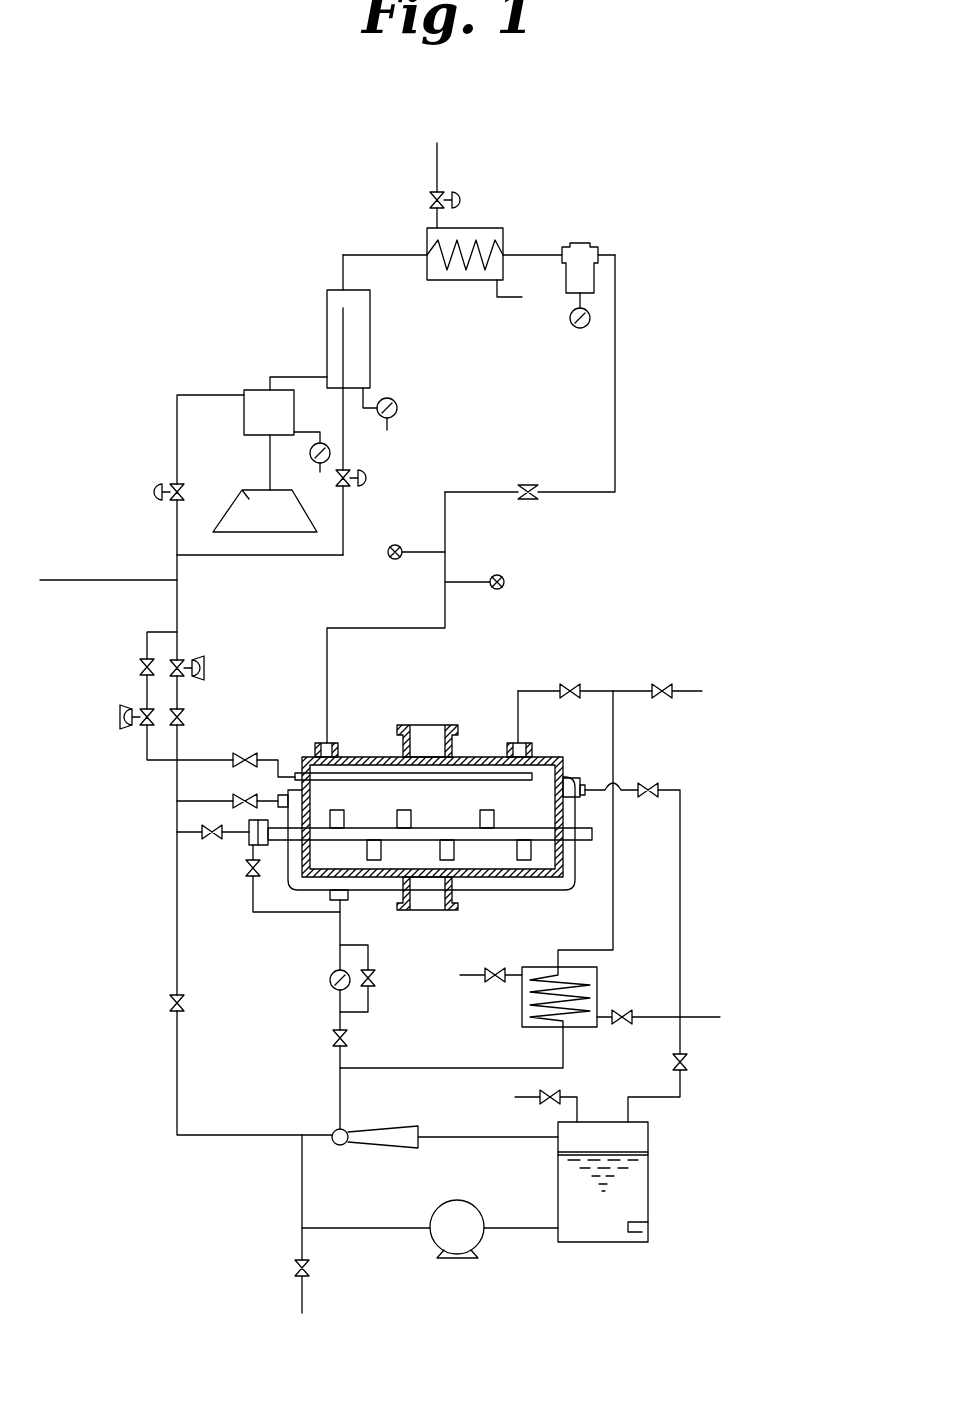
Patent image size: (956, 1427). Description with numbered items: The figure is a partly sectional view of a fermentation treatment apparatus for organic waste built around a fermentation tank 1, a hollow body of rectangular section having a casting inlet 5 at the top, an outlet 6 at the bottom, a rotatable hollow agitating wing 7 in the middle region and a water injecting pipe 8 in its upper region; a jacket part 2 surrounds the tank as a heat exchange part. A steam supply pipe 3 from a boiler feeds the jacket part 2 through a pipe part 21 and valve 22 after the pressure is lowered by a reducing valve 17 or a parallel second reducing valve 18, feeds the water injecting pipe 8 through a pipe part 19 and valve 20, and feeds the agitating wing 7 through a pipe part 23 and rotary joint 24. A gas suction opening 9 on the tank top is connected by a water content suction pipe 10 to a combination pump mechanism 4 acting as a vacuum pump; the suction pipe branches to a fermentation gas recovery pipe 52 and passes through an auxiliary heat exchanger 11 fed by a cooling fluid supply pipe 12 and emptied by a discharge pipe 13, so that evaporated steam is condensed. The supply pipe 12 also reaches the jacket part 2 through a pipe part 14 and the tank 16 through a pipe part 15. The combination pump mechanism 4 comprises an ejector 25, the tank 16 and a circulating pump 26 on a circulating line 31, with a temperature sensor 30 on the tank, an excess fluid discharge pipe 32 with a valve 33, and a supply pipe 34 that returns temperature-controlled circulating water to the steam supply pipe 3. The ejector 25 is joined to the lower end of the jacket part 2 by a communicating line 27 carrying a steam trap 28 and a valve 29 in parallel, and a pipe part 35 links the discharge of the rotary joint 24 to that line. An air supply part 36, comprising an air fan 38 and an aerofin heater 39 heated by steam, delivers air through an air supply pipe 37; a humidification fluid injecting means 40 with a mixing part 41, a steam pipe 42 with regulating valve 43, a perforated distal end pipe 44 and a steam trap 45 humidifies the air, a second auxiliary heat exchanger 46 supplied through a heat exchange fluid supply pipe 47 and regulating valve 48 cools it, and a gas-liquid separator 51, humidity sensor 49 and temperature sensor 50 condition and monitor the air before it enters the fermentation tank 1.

The fermentation tank 1 is at (380, 800).
The jacket part 2 is at (484, 886).
The steam supply pipe 3 is at (80, 580).
The combination pump mechanism 4 is at (390, 1192).
The casting inlet 5 is at (428, 746).
The outlet 6 is at (435, 898).
The agitating wing 7 is at (513, 834).
The water injecting pipe 8 is at (348, 772).
The gas suction opening 9 is at (515, 746).
The water content suction pipe 10 is at (599, 690).
The auxiliary heat exchanger 11 is at (599, 986).
The cooling fluid supply pipe 12 is at (710, 1017).
The discharge pipe 13 is at (474, 978).
The pipe part 14 is at (684, 900).
The pipe part 15 is at (664, 1104).
The tank 16 is at (638, 1137).
The reducing valve 17 is at (185, 662).
The second reducing valve 18 is at (131, 712).
The pipe part 19 is at (212, 758).
The valve 20 is at (246, 754).
The pipe part 21 is at (196, 796).
The valve 22 is at (240, 794).
The pipe part 23 is at (186, 828).
The rotary joint 24 is at (238, 843).
The ejector 25 is at (356, 1119).
The circulating pump 26 is at (472, 1242).
The communicating line 27 is at (340, 922).
The steam trap 28 is at (330, 982).
The valve 29 is at (376, 984).
The temperature sensor 30 is at (650, 1242).
The circulating line 31 is at (360, 1232).
The excess fluid discharge pipe 32 is at (299, 1242).
The valve 33 is at (290, 1276).
The supply pipe 34 is at (177, 1052).
The pipe part 35 is at (248, 893).
The air supply part 36 is at (221, 369).
The air supply pipe 37 is at (618, 418).
The air fan 38 is at (251, 486).
The aerofin heater 39 is at (258, 400).
The humidification fluid injecting means 40 is at (334, 264).
The mixing part 41 is at (372, 357).
The steam pipe 42 is at (345, 528).
The regulating valve 43 is at (362, 476).
The distal end pipe 44 is at (348, 335).
The steam trap 45 is at (397, 402).
The second auxiliary heat exchanger 46 is at (500, 233).
The heat exchange fluid supply pipe 47 is at (440, 160).
The regulating valve 48 is at (426, 200).
The humidity sensor 49 is at (398, 560).
The temperature sensor 50 is at (505, 582).
The gas-liquid separator 51 is at (592, 248).
The fermentation gas recovery pipe 52 is at (691, 688).